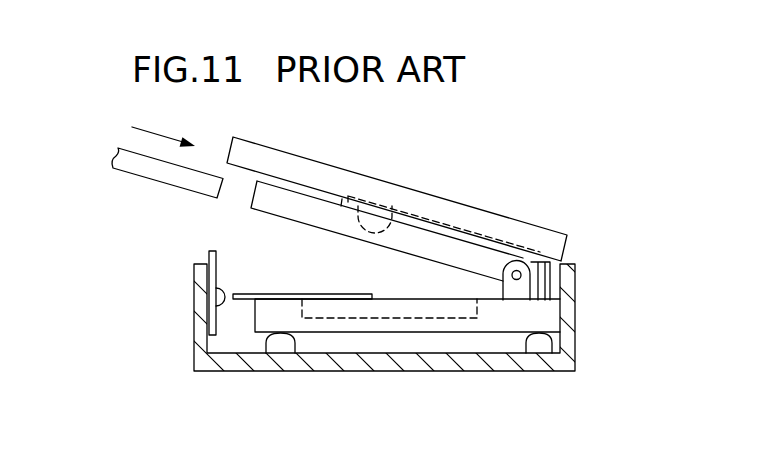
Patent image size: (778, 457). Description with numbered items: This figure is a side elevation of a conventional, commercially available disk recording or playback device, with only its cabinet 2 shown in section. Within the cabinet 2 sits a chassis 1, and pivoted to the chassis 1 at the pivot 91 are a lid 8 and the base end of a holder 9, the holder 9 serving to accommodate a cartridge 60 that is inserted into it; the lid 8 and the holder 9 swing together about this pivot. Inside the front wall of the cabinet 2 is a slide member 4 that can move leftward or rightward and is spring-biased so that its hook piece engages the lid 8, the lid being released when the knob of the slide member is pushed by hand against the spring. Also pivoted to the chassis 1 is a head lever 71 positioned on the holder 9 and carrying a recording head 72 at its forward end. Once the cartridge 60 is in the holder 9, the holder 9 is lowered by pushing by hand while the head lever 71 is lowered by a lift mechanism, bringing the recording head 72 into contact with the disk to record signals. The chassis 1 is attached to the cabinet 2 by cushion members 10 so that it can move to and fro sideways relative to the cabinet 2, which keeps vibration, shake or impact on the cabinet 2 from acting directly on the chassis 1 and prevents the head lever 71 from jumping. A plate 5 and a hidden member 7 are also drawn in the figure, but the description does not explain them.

The chassis 1 is at (493, 325).
The cabinet 2 is at (577, 332).
The slide member 4 is at (223, 256).
The plate 5 is at (337, 300).
The hidden member in base 7 is at (381, 312).
The lid 8 is at (280, 158).
The holder 9 is at (468, 238).
The cushion members 10 is at (278, 347).
The cartridge 60 is at (155, 175).
The head lever 71 is at (437, 220).
The recording head 72 is at (402, 210).
The pivot 91 is at (531, 262).